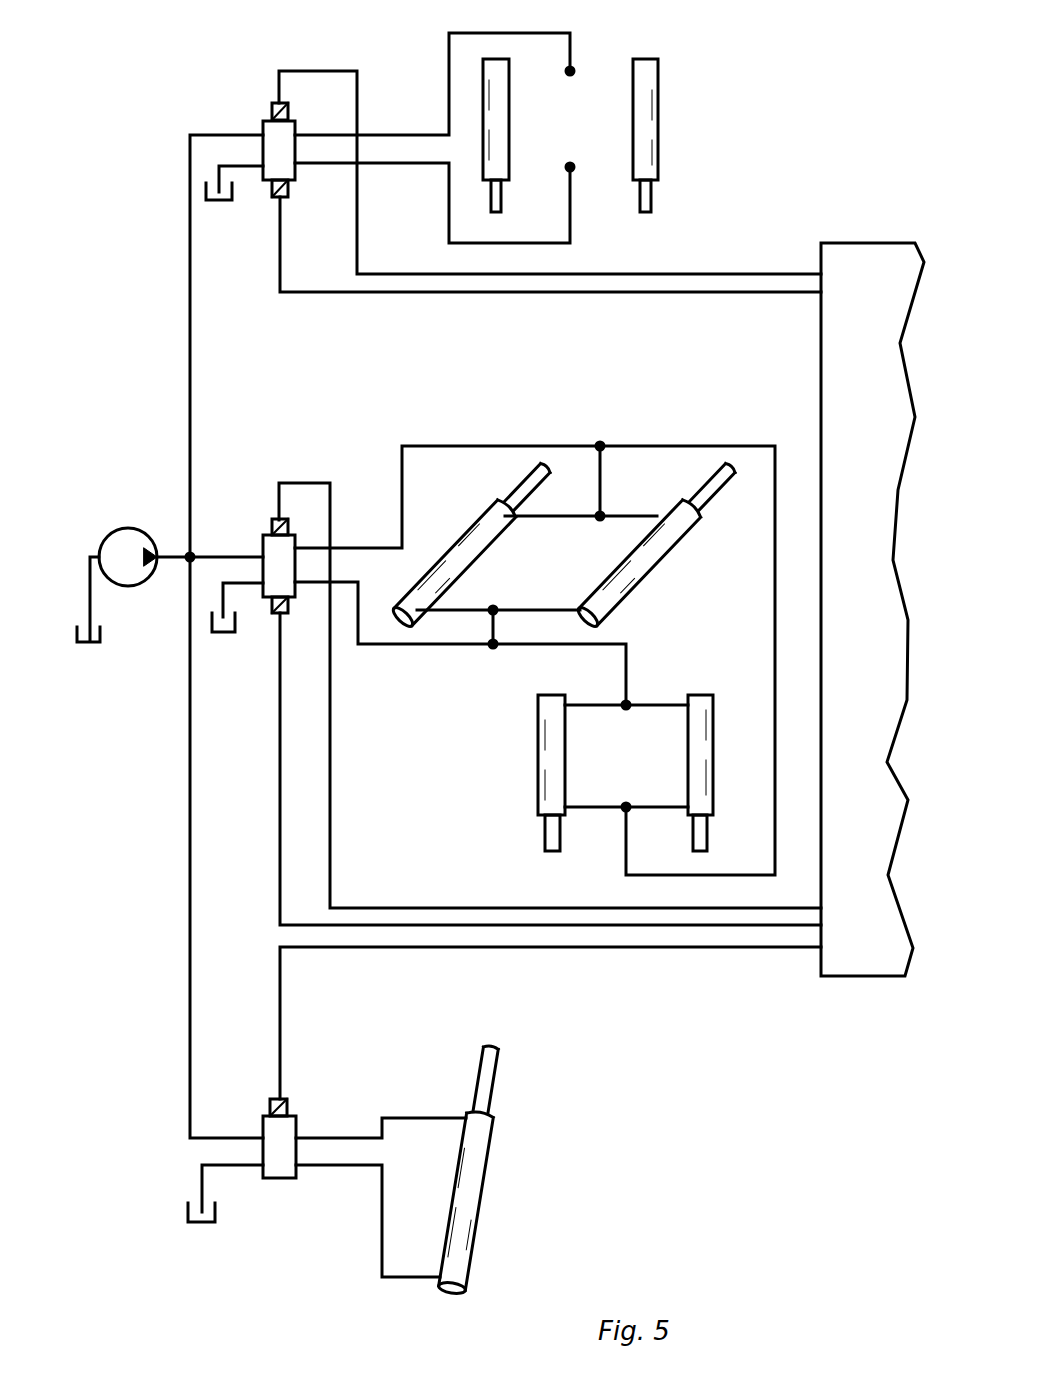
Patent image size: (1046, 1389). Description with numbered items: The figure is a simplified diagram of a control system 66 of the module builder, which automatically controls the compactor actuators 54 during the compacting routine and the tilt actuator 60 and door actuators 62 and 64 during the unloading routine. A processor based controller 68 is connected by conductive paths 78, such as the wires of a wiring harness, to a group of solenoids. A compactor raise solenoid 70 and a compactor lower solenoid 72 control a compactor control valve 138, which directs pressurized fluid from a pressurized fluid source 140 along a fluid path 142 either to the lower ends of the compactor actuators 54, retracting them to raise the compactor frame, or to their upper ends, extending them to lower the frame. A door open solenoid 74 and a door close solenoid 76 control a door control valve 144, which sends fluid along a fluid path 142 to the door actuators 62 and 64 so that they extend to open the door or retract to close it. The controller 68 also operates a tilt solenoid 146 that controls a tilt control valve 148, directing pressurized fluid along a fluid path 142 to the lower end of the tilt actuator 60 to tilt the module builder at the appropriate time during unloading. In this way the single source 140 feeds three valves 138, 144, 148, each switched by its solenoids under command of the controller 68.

The compactor actuators 54 is at (633, 125).
The tilt actuator 60 is at (482, 1207).
The door actuators 62 is at (612, 572).
The door actuators 64 is at (688, 755).
The control system 66 is at (153, 192).
The processor based controller 68 is at (841, 329).
The compactor raise solenoid 70 is at (272, 109).
The compactor lower solenoid 72 is at (272, 192).
The door open solenoid 74 is at (272, 526).
The door close solenoid 76 is at (272, 612).
The conductive paths 78 is at (320, 71).
The compactor control valve 138 is at (297, 128).
The pressurized fluid source 140 is at (128, 528).
The fluid path 142 is at (397, 136).
The door control valve 144 is at (296, 536).
The tilt solenoid 146 is at (288, 1108).
The tilt control valve 148 is at (282, 1180).